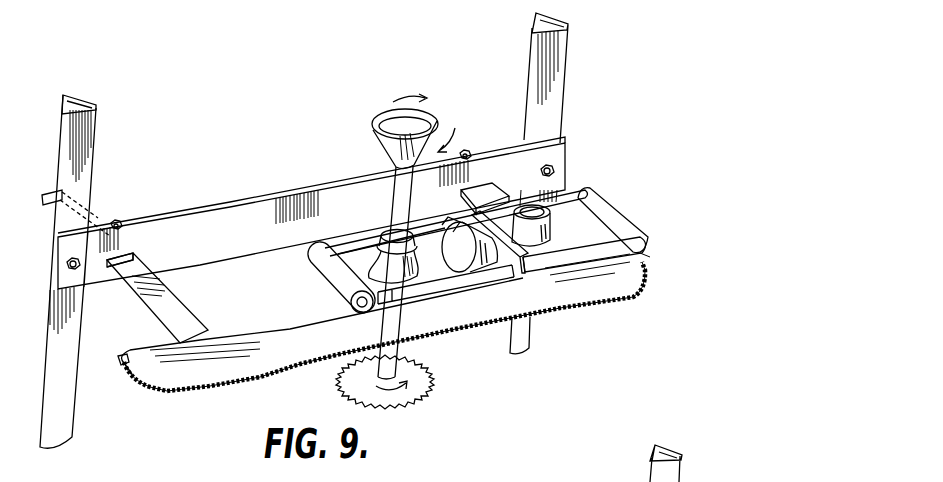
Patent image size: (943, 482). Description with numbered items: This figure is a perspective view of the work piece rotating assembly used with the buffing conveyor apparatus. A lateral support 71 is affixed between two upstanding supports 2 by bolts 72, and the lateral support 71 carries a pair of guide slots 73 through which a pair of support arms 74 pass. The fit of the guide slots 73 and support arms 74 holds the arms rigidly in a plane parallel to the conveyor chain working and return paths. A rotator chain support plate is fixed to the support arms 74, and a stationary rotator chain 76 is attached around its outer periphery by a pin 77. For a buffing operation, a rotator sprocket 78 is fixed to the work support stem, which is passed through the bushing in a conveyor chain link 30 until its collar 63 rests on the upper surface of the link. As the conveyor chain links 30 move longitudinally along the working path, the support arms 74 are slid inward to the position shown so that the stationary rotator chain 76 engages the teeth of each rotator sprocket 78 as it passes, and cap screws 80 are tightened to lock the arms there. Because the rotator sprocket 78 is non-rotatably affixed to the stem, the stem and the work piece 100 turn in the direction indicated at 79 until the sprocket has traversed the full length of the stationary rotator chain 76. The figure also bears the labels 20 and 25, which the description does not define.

The upstanding supports 2 is at (69, 131).
The frame assembly 20 is at (280, 170).
The guide bar 25 is at (376, 314).
The conveyor chain link 30 is at (571, 200).
The collar 63 is at (405, 233).
The lateral support 71 is at (256, 241).
The bolts 72 is at (67, 268).
The guide slots 73 is at (124, 256).
The support arms 74 is at (187, 309).
The stationary rotator chain 76 is at (261, 378).
The pin 77 is at (118, 358).
The rotator sprocket 78 is at (419, 393).
The direction of rotation 79 is at (425, 371).
The cap screws 80 is at (117, 222).
The work piece 100 is at (378, 140).